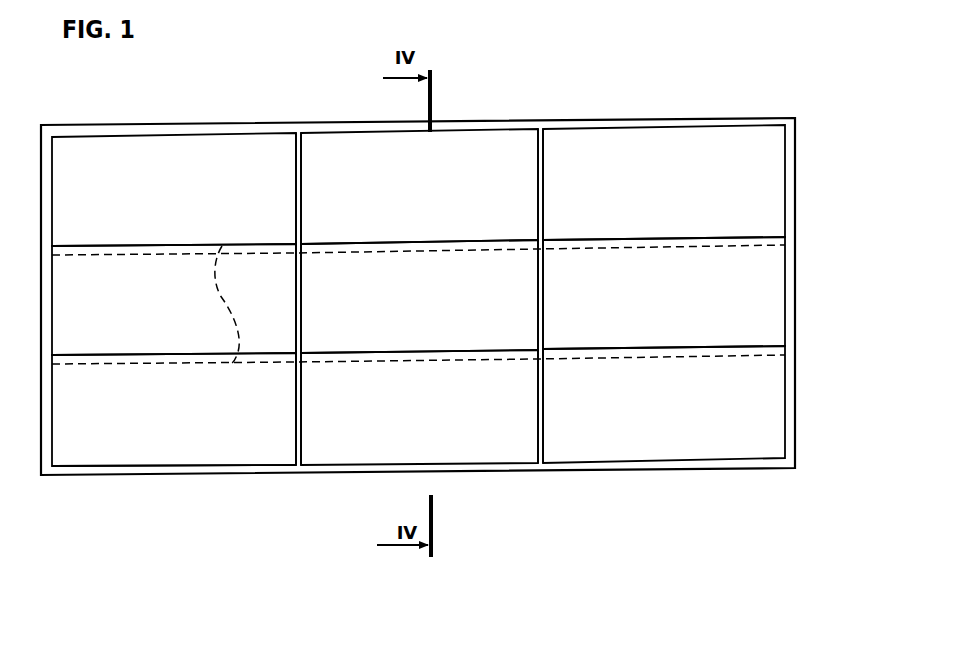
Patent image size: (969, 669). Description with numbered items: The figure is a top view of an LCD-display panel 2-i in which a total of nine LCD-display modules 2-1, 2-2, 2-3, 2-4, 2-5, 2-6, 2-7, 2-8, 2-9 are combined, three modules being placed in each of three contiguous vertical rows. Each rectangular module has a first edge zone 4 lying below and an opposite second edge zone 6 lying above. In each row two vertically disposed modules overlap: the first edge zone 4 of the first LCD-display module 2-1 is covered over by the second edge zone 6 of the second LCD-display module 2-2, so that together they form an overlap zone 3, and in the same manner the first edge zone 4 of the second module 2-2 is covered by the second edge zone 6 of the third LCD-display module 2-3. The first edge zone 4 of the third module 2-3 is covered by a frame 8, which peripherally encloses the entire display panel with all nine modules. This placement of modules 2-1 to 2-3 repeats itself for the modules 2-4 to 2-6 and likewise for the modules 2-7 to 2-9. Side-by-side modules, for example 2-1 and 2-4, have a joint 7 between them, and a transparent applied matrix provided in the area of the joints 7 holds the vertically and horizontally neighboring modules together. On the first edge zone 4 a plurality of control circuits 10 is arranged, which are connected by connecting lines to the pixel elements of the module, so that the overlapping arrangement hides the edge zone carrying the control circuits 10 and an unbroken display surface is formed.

The first LCD-display module 2-1 is at (174, 189).
The second LCD-display module 2-2 is at (174, 299).
The third LCD-display module 2-3 is at (174, 409).
The LCD-display module 2-4 is at (419, 186).
The LCD-display module 2-5 is at (419, 296).
The LCD-display module 2-6 is at (419, 407).
The LCD-display module 2-7 is at (664, 182).
The LCD-display module 2-8 is at (664, 293).
The LCD-display module 2-9 is at (664, 404).
The LCD-display panel 2-i is at (596, 540).
The overlap zone 3 is at (446, 213).
The first edge zone 4 is at (227, 305).
The second edge zone 6 is at (95, 248).
The joint 7 is at (297, 148).
The frame 8 is at (67, 478).
The control circuits 10 is at (150, 470).